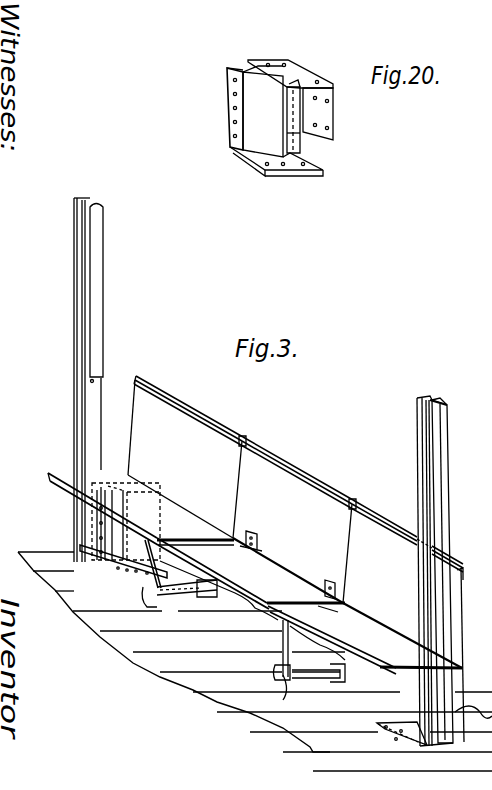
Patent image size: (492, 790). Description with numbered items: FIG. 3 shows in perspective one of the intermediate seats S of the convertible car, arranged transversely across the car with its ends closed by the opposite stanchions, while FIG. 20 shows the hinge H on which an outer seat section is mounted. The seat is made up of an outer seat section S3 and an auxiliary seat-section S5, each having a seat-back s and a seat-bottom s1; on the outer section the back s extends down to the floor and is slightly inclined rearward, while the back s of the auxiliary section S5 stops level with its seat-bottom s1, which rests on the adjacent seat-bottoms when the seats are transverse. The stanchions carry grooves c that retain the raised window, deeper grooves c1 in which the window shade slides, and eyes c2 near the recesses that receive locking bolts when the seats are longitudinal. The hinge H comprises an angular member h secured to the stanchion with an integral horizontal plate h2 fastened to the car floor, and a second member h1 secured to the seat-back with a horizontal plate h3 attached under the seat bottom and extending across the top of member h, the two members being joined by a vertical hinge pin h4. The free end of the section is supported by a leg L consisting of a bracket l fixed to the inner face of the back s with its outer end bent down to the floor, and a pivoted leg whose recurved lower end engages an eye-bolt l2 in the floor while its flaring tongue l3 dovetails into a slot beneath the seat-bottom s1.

In FIG. 20, the hinge H is at (275, 126).
In FIG. 3, the hinge H is at (113, 560).
In FIG. 20, the angular hinge member h is at (268, 121).
In FIG. 20, the seat-back hinge member h1 is at (322, 112).
In FIG. 20, the horizontal floor plate h2 is at (292, 162).
In FIG. 20, the horizontal seat-bottom plate h3 is at (296, 72).
In FIG. 20, the vertical hinge pin h4 is at (299, 83).
In FIG. 3, the window groove c is at (97, 200).
In FIG. 3, the window-shade groove c1 is at (101, 205).
In FIG. 3, the eye c2 is at (93, 381).
In FIG. 3, the seat-back s is at (296, 561).
In FIG. 3, the seat-bottom s1 is at (255, 573).
In FIG. 3, the top rail S is at (297, 466).
In FIG. 3, the seat section S3 is at (188, 410).
In FIG. 3, the auxiliary seat-section S5 is at (390, 513).
In FIG. 3, the bracket l is at (138, 588).
In FIG. 3, the eye-bolt l2 is at (150, 613).
In FIG. 3, the flaring tongue l3 is at (160, 565).
In FIG. 3, the leg L is at (236, 649).